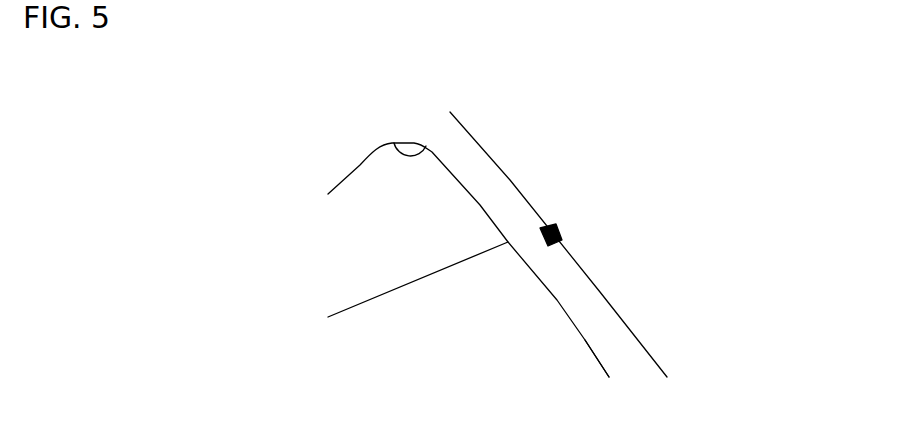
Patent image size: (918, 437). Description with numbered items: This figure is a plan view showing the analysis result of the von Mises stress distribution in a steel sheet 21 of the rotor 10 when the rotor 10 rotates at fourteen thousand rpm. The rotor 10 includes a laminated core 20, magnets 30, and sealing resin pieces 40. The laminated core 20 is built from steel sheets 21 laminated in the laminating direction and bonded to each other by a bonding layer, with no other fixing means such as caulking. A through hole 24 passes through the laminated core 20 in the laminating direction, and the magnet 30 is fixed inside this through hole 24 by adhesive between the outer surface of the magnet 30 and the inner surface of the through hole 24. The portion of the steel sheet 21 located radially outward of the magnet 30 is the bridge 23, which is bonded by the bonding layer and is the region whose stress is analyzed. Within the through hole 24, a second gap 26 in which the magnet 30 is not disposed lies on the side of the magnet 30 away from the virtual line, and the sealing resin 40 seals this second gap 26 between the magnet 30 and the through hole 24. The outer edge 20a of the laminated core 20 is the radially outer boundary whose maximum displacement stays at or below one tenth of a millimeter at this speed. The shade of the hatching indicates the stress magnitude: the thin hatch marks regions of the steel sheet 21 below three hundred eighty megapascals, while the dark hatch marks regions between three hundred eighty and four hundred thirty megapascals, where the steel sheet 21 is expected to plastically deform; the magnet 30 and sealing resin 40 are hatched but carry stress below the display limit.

The rotor 10 is at (648, 138).
The laminated core 20 is at (667, 363).
The outer edge of the laminated core 20a is at (480, 138).
The steel sheet 21 is at (342, 162).
The bridge 23 is at (620, 337).
The through hole 24 is at (602, 363).
The second gap 26 is at (394, 143).
The magnet 30 is at (370, 352).
The sealing resin 40 is at (363, 263).